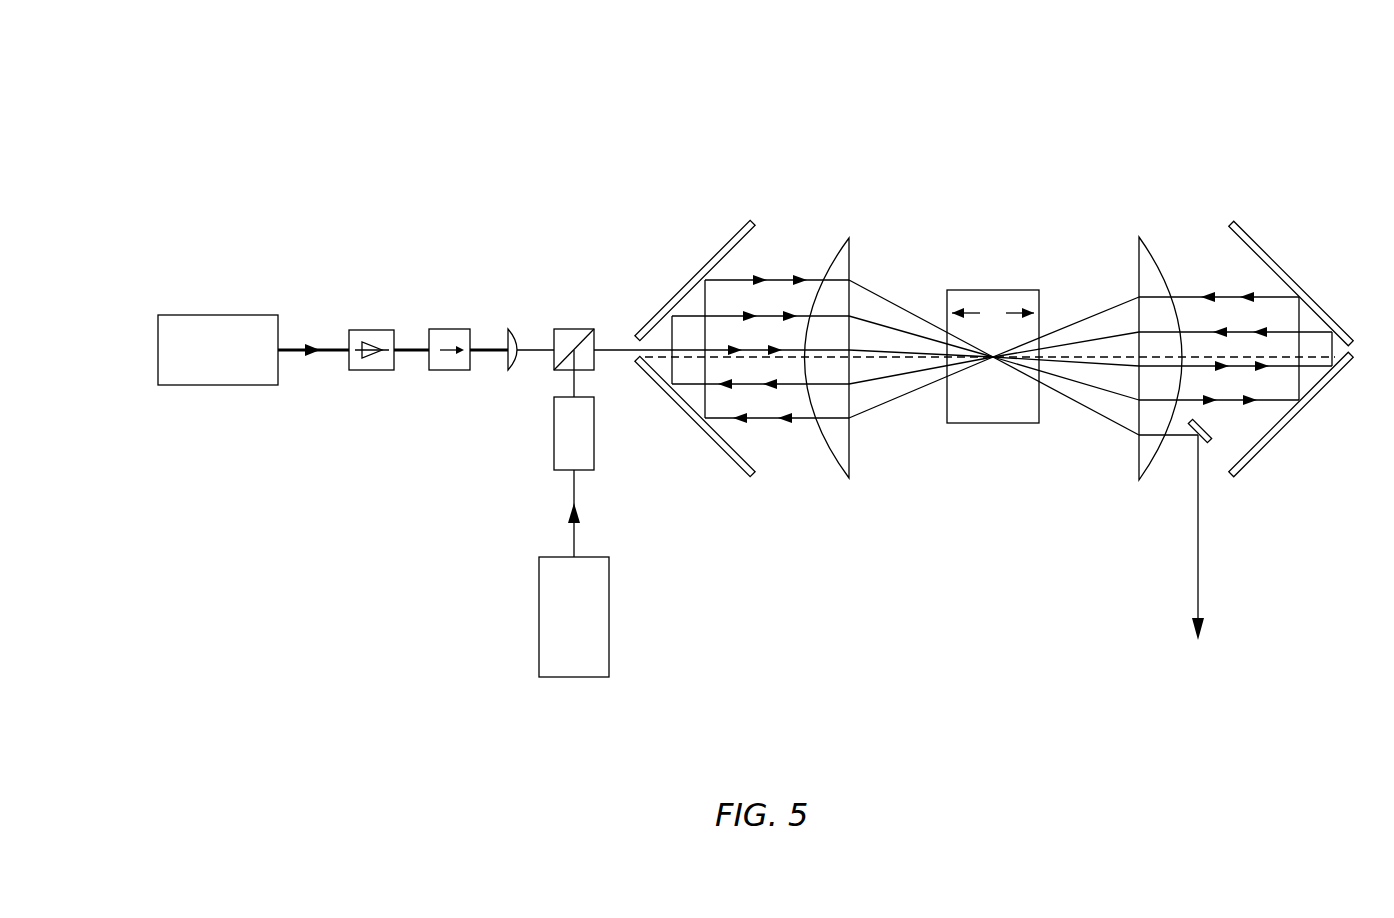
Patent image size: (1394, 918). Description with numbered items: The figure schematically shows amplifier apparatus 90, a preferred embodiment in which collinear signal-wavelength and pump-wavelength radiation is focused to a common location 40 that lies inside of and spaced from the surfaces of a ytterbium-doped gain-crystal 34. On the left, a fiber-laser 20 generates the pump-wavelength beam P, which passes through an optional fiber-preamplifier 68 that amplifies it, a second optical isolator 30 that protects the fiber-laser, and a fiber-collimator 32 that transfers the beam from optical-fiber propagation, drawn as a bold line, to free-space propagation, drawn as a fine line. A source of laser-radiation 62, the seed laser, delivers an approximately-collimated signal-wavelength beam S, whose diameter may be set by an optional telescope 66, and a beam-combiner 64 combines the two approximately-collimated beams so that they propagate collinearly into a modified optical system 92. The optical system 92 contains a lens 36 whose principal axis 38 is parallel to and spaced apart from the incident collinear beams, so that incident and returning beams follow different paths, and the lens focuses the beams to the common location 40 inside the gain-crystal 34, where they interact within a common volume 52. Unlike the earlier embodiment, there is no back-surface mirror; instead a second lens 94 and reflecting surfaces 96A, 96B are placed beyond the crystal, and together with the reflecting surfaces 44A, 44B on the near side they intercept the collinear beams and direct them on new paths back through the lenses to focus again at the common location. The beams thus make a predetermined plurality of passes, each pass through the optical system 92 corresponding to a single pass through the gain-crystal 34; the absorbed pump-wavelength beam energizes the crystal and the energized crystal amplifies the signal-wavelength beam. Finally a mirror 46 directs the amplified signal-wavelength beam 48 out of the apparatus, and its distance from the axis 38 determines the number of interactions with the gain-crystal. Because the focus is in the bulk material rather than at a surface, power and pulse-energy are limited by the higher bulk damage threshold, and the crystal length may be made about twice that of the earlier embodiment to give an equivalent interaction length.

The fiber-laser 20 is at (199, 305).
The pump beam P is at (312, 346).
The seed beam S is at (569, 512).
The fiber-preamplifier 68 is at (361, 330).
The second optical isolator 30 is at (441, 329).
The fiber-collimator 32 is at (509, 331).
The beam-combiner 64 is at (575, 318).
The telescope 66 is at (552, 448).
The source of laser-radiation 62 is at (539, 655).
The modified optical system 92 is at (735, 102).
The reflecting surface 44A is at (718, 248).
The reflecting surface 44B is at (715, 448).
The lens 36 is at (840, 243).
The principal axis 38 is at (880, 357).
The ytterbium-doped gain-crystal 34 is at (976, 278).
The common volume 52 is at (985, 380).
The common location 40 is at (995, 362).
The second lens 94 is at (1148, 237).
The amplifier apparatus 90 is at (988, 703).
The reflecting surface 96A is at (1270, 258).
The reflecting surface 96B is at (1275, 440).
The mirror 46 is at (1207, 446).
The amplified signal-wavelength beam 48 is at (1195, 557).